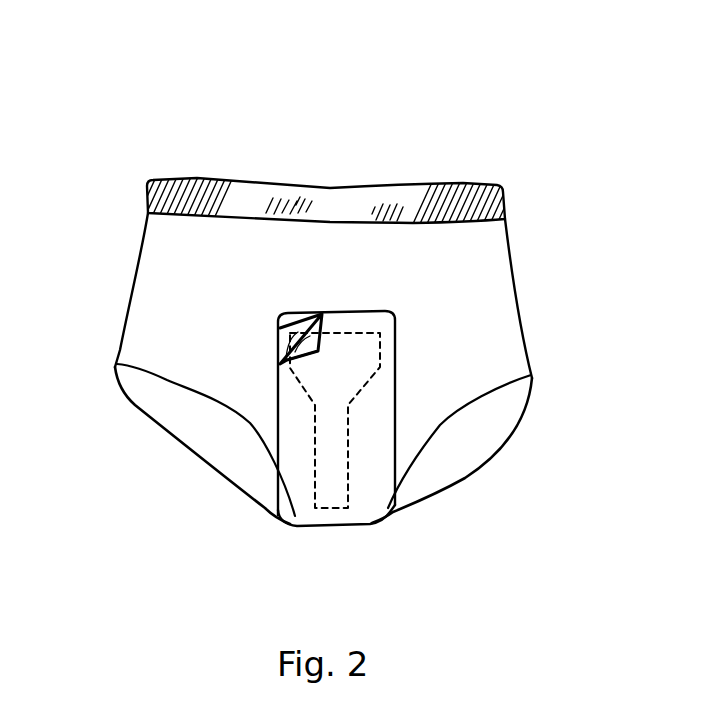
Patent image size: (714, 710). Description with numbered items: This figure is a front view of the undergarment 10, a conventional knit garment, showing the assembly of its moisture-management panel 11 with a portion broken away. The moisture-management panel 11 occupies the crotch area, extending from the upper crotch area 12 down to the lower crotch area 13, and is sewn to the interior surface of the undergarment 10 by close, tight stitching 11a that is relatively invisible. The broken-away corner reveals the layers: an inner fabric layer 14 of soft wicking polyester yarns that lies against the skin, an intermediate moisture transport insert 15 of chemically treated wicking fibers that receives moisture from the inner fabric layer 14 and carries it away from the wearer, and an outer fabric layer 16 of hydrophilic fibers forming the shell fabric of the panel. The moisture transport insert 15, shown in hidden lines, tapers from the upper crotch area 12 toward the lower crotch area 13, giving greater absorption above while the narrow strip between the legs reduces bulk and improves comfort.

The undergarment 10 is at (546, 150).
The moisture-management panel 11 is at (290, 470).
The stitching 11a is at (396, 387).
The upper crotch area 12 is at (241, 364).
The lower crotch area 13 is at (313, 540).
The inner fabric layer 14 is at (278, 318).
The moisture transport insert 15 is at (278, 337).
The outer fabric layer 16 is at (303, 362).